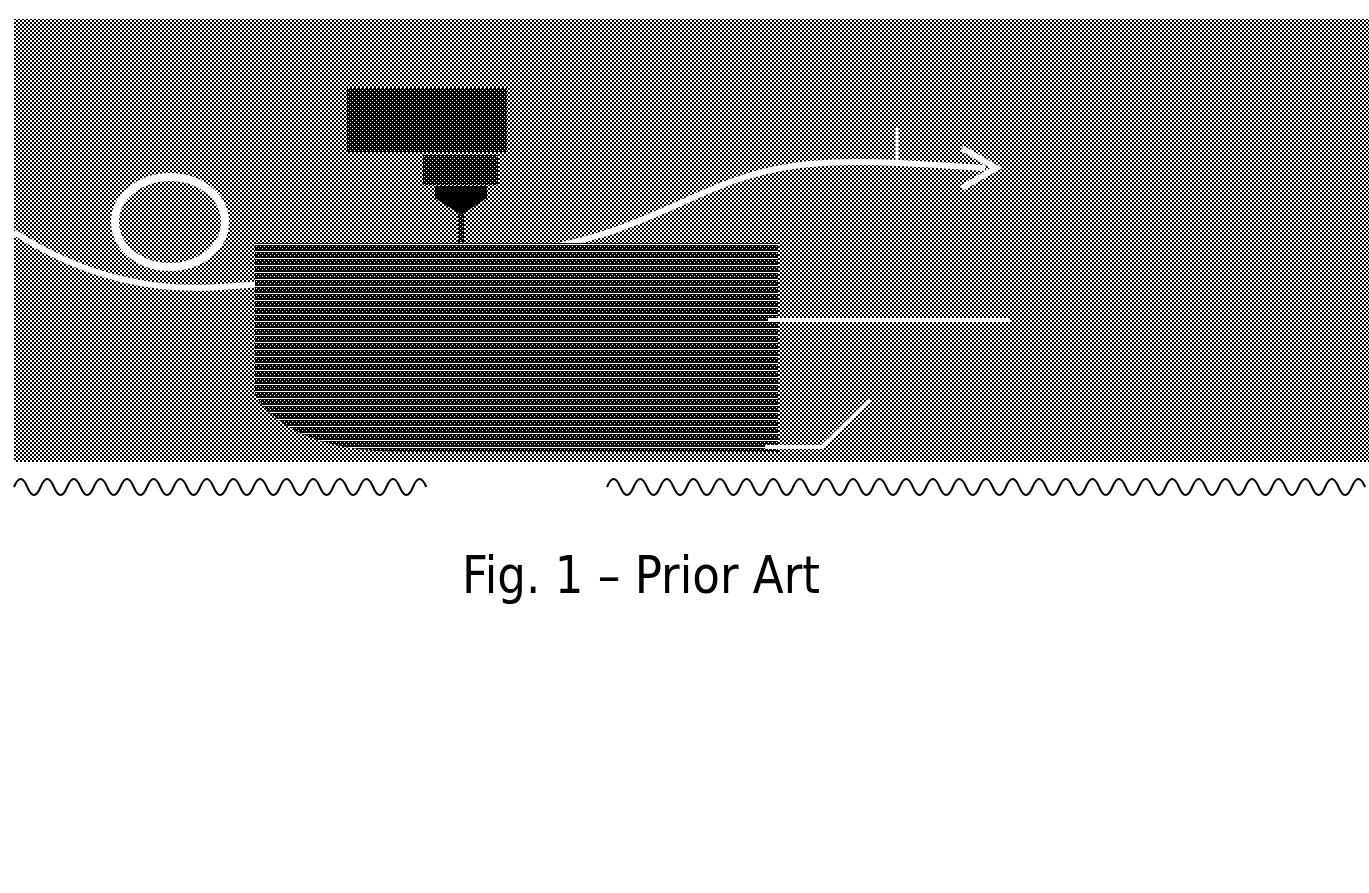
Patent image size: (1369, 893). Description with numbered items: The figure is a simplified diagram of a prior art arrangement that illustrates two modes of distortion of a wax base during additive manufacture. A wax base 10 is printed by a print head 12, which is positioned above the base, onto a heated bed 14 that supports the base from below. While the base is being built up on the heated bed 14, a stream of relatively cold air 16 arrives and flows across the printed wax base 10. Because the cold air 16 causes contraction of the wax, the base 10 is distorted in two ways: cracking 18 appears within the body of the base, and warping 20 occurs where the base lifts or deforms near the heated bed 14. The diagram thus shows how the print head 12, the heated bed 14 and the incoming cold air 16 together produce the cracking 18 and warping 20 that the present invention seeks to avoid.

The wax base 10 is at (257, 388).
The print head 12 is at (423, 172).
The heated bed 14 is at (267, 478).
The cold air 16 is at (987, 170).
The cracking 18 is at (924, 300).
The warping 20 is at (922, 406).